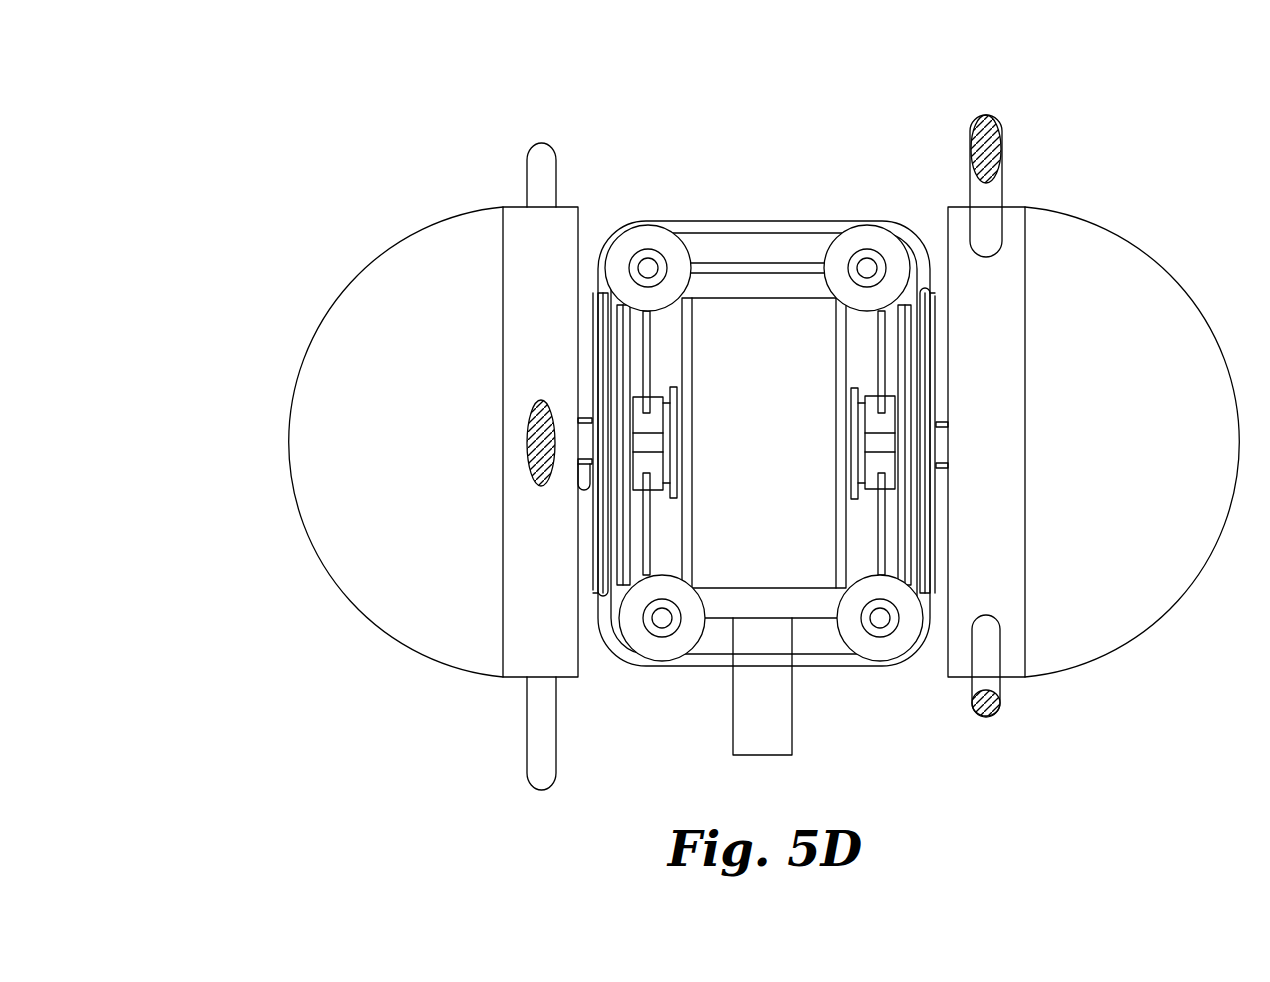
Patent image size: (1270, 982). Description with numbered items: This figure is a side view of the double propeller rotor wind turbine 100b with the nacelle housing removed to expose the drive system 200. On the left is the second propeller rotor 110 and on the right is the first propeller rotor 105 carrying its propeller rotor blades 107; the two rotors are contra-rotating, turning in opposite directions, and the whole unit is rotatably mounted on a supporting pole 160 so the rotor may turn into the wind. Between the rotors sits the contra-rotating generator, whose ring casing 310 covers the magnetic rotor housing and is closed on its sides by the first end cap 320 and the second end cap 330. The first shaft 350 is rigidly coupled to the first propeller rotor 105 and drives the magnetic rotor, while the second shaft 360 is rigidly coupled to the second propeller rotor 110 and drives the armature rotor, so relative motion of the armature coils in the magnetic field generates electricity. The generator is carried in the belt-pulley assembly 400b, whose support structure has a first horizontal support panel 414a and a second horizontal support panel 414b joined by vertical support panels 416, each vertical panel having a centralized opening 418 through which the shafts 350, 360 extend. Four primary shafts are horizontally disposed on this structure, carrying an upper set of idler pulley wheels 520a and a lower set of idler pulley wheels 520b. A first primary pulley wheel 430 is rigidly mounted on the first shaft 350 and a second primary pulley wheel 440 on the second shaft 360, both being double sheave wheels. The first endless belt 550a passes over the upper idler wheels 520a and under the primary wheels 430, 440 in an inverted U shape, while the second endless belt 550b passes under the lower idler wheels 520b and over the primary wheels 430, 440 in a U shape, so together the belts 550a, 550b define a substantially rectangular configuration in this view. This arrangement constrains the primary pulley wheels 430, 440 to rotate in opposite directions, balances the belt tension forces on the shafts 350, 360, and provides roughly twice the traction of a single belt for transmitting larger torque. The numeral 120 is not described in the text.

The double propeller rotor wind turbine 100b is at (284, 113).
The first propeller rotor 105 is at (1172, 210).
The propeller rotor blades 107 is at (1002, 140).
The second propeller rotor 110 is at (331, 250).
The knob pin 120 is at (529, 152).
The pole 160 is at (733, 745).
The drive system 200 is at (726, 150).
The casing 310 is at (783, 391).
The first end cap 320 is at (836, 490).
The second end cap 330 is at (692, 540).
The first shaft 350 is at (943, 443).
The second shaft 360 is at (583, 470).
The belt-pulley assembly 400b is at (710, 190).
The first horizontal support panel 414a is at (800, 273).
The second horizontal support panel 414b is at (812, 615).
The vertical support panels 416 is at (650, 333).
The centralized opening 418 is at (652, 432).
The first primary pulley wheel 430 is at (937, 582).
The second primary pulley wheel 440 is at (593, 300).
The upper set of idler pulley wheels 520a is at (623, 248).
The lower set of idler pulley wheels 520b is at (640, 643).
The first endless belt 550a is at (776, 221).
The second endless belt 550b is at (823, 667).